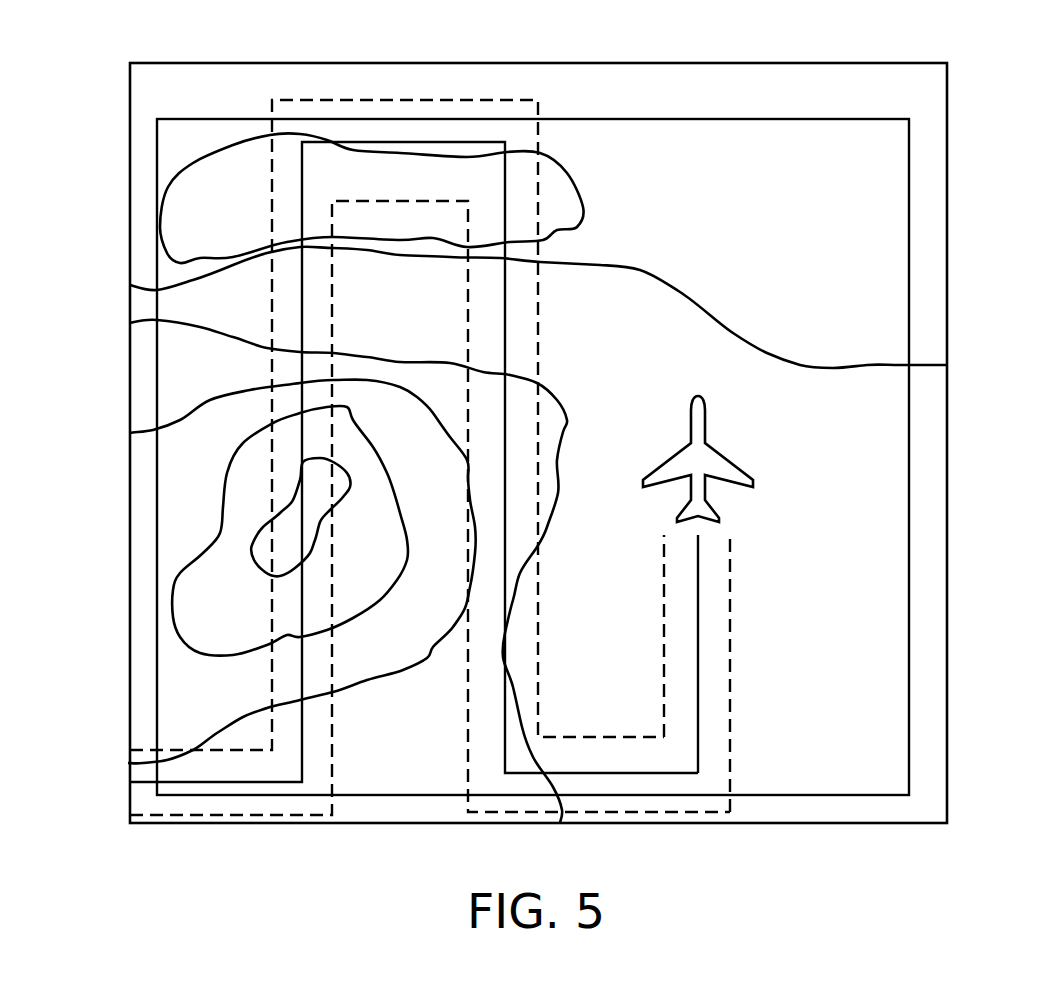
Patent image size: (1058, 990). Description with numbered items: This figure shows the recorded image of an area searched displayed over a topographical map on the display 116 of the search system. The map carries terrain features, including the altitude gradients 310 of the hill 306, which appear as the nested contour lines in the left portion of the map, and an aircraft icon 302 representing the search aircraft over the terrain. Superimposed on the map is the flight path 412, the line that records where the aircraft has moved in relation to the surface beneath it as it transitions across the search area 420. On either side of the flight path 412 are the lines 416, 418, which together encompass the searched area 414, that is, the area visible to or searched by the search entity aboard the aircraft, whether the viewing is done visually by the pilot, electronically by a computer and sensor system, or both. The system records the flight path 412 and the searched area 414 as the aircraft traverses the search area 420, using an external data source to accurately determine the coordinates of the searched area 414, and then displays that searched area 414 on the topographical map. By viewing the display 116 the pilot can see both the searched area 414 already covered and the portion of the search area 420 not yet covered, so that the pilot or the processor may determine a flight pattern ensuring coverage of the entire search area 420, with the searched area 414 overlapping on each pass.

The display 116 is at (421, 63).
The search area 420 is at (704, 119).
The altitude gradients 310 is at (717, 280).
The aircraft icon 302 is at (752, 438).
The hill 306 is at (283, 547).
The flight path 412 is at (698, 672).
The searched area 414 is at (717, 713).
The line 416 is at (664, 560).
The line 418 is at (731, 560).